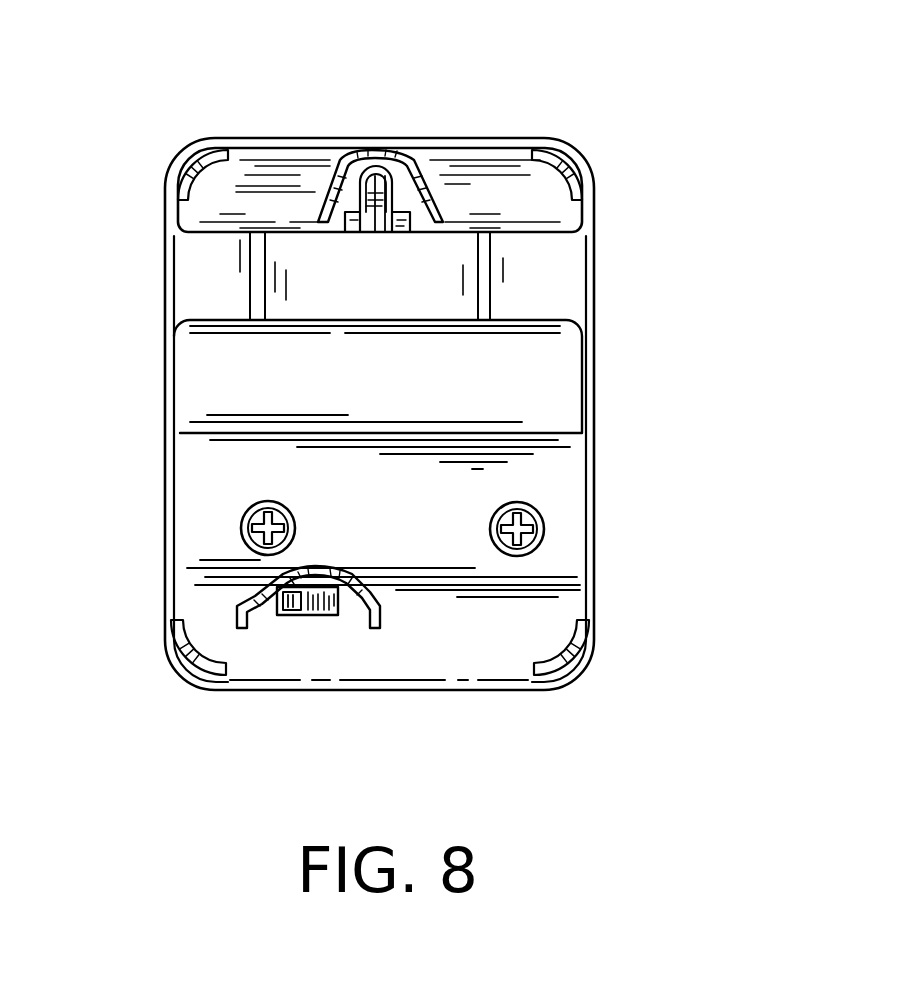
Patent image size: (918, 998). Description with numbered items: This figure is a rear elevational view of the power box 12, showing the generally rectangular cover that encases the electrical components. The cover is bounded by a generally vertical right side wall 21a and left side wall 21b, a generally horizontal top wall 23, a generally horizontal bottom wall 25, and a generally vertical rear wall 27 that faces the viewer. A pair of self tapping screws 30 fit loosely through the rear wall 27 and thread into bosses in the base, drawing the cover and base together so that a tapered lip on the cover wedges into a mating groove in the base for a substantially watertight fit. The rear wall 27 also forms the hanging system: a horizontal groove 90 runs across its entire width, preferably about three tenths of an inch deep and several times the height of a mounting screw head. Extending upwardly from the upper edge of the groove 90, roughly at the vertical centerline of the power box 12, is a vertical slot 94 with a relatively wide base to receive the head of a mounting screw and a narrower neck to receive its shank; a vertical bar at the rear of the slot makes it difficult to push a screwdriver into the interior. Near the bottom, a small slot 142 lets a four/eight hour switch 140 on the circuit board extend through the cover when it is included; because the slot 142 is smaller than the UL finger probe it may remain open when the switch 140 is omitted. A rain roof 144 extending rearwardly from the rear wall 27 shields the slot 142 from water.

The power box 12 is at (506, 108).
The right side wall 21a is at (596, 374).
The left side wall 21b is at (167, 410).
The top wall 23 is at (286, 136).
The bottom wall 25 is at (490, 684).
The rear wall 27 is at (388, 406).
The self tapping screws 30 is at (240, 518).
The horizontal groove 90 is at (433, 298).
The vertical slot 94 is at (376, 238).
The 4/8 hour switch 140 is at (303, 612).
The slot 142 is at (332, 614).
The rain roof 144 is at (250, 588).